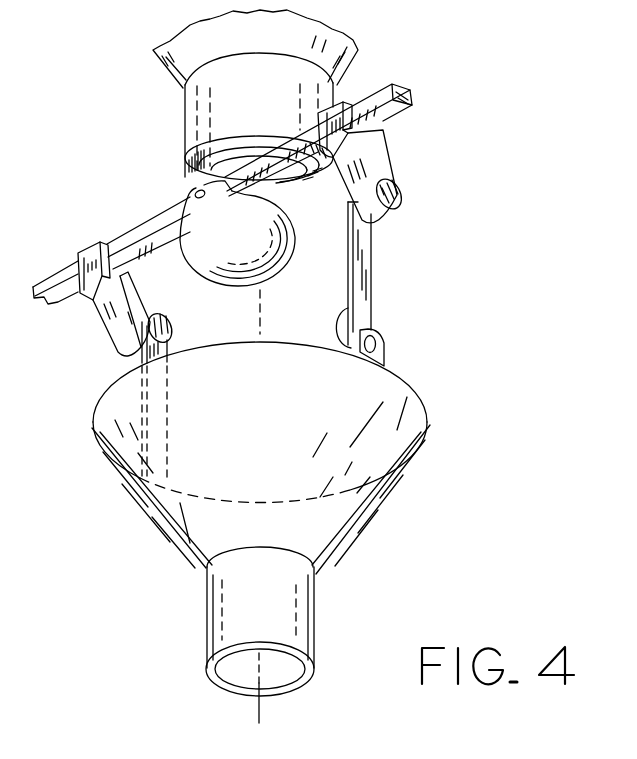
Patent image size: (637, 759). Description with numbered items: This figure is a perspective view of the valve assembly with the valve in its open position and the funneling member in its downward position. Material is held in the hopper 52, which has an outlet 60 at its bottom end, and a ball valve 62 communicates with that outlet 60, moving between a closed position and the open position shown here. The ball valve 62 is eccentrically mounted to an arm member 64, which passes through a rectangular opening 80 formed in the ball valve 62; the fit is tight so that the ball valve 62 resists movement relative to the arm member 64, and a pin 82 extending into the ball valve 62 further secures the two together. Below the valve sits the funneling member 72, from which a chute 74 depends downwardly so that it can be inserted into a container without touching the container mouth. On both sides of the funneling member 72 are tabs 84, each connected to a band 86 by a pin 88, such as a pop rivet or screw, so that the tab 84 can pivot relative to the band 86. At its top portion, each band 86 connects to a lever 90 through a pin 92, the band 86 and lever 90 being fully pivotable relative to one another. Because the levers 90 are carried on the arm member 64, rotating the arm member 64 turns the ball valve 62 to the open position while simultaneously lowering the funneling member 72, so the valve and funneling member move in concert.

The material hopper 52 is at (172, 74).
The outlet 60 is at (187, 168).
The ball valve 62 is at (270, 253).
The arm member 64 is at (148, 230).
The funneling member 72 is at (380, 458).
The chute 74 is at (298, 622).
The rectangular opening 80 is at (293, 225).
The pin 82 is at (194, 196).
The tab 84 is at (384, 357).
The band 86 is at (373, 256).
The pin 88 is at (352, 308).
The lever 90 is at (375, 152).
The pin 92 is at (397, 188).